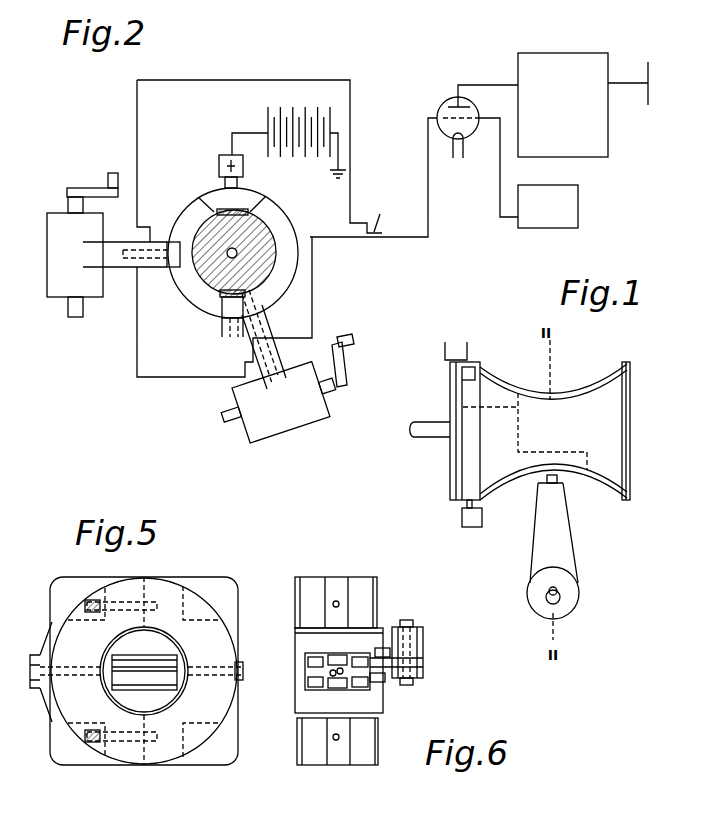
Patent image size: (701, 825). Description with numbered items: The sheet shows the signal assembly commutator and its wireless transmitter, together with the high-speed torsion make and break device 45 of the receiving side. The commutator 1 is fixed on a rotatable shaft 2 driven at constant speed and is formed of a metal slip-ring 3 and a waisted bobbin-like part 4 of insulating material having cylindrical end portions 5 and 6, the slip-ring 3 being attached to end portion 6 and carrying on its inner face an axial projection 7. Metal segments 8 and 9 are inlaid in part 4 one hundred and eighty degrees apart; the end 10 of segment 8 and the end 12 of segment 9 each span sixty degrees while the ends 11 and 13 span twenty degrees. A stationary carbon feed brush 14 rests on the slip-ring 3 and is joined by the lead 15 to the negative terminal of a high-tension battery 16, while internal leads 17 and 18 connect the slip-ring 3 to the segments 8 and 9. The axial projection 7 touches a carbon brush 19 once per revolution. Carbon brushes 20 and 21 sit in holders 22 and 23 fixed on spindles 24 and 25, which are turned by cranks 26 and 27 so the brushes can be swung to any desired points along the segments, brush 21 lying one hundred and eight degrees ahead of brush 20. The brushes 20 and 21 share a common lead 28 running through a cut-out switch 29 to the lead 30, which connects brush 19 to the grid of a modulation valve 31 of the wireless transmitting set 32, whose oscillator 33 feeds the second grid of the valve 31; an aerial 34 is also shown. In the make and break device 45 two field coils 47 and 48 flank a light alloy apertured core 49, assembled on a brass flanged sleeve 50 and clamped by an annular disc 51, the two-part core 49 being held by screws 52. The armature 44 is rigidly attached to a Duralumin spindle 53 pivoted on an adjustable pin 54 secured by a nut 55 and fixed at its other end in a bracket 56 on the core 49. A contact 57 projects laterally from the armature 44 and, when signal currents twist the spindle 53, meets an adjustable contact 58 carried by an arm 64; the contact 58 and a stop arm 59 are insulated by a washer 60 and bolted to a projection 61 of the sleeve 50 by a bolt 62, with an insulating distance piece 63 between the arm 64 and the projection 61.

In FIG. 1, the commutator 1 is at (630, 426).
In FIG. 2, the rotatable shaft 2 is at (237, 256).
In FIG. 1, the rotatable shaft 2 is at (423, 422).
In FIG. 1, the slip-ring 3 is at (455, 460).
In FIG. 2, the waisted bobbin-like part 4 is at (270, 236).
In FIG. 1, the waisted bobbin-like part 4 is at (552, 431).
In FIG. 1, the cylindrical end portion 5 is at (630, 388).
In FIG. 2, the cylindrical end portion 6 is at (185, 206).
In FIG. 1, the cylindrical end portion 6 is at (465, 482).
In FIG. 1, the axial projection 7 is at (462, 376).
In FIG. 2, the segment 8 is at (232, 202).
In FIG. 1, the segment 8 is at (540, 391).
In FIG. 2, the segment 9 is at (232, 313).
In FIG. 1, the segment 9 is at (541, 479).
In FIG. 2, the end of segment 8 10 is at (220, 197).
In FIG. 1, the end of segment 8 10 is at (493, 378).
In FIG. 1, the end of segment 8 11 is at (605, 370).
In FIG. 1, the end of segment 9 12 is at (607, 492).
In FIG. 1, the end of segment 9 13 is at (488, 490).
In FIG. 2, the carbon feed brush 14 is at (222, 178).
In FIG. 1, the carbon feed brush 14 is at (460, 346).
In FIG. 2, the lead 15 is at (235, 133).
In FIG. 2, the high-tension battery 16 is at (300, 112).
In FIG. 1, the lead 17 is at (499, 410).
In FIG. 1, the lead 18 is at (520, 417).
In FIG. 2, the carbon brush 19 is at (230, 327).
In FIG. 1, the carbon brush 19 is at (465, 505).
In FIG. 2, the carbon brush 20 is at (264, 303).
In FIG. 1, the carbon brush 20 is at (554, 533).
In FIG. 2, the carbon brush 21 is at (185, 268).
In FIG. 2, the holder 22 is at (281, 402).
In FIG. 1, the holder 22 is at (553, 575).
In FIG. 2, the holder 23 is at (75, 255).
In FIG. 2, the spindle 24 is at (222, 420).
In FIG. 1, the spindle 24 is at (563, 599).
In FIG. 2, the spindle 25 is at (75, 317).
In FIG. 2, the crank 26 is at (347, 363).
In FIG. 2, the crank 27 is at (88, 188).
In FIG. 2, the common lead 28 is at (251, 80).
In FIG. 2, the cut-out switch 29 is at (382, 213).
In FIG. 2, the lead 30 is at (312, 285).
In FIG. 2, the modulation valve 31 is at (445, 100).
In FIG. 2, the wireless transmitting set 32 is at (563, 105).
In FIG. 2, the oscillator 33 is at (548, 206).
In FIG. 2, the antenna 34 is at (648, 78).
In FIG. 5, the armature 44 is at (130, 656).
In FIG. 6, the armature 44 is at (347, 688).
In FIG. 6, the high speed make and break device 45 is at (322, 741).
In FIG. 6, the field coil 47 is at (359, 588).
In FIG. 6, the field coil 48 is at (309, 588).
In FIG. 5, the apertured core 49 is at (144, 671).
In FIG. 6, the apertured core 49 is at (327, 578).
In FIG. 6, the flanged sleeve 50 is at (295, 607).
In FIG. 5, the annular disc 51 is at (144, 671).
In FIG. 6, the annular disc 51 is at (379, 597).
In FIG. 5, the screws 52 is at (144, 669).
In FIG. 6, the screws 52 is at (337, 600).
In FIG. 5, the armature spindle 53 is at (80, 676).
In FIG. 5, the pin 54 is at (212, 676).
In FIG. 5, the nut 55 is at (243, 663).
In FIG. 5, the bracket 56 is at (42, 690).
In FIG. 6, the contact 57 is at (385, 680).
In FIG. 6, the adjustable contact 58 is at (377, 655).
In FIG. 6, the arm 59 is at (373, 683).
In FIG. 6, the washer 60 is at (425, 666).
In FIG. 6, the projection 61 is at (423, 628).
In FIG. 6, the bolt 62 is at (405, 620).
In FIG. 6, the distance piece 63 is at (425, 635).
In FIG. 6, the arm 64 is at (425, 656).